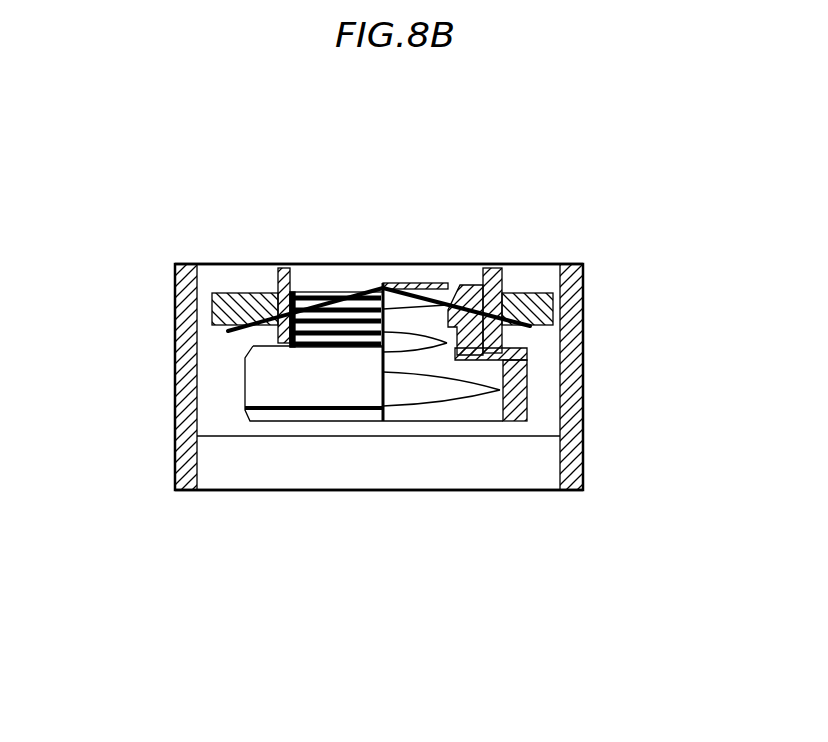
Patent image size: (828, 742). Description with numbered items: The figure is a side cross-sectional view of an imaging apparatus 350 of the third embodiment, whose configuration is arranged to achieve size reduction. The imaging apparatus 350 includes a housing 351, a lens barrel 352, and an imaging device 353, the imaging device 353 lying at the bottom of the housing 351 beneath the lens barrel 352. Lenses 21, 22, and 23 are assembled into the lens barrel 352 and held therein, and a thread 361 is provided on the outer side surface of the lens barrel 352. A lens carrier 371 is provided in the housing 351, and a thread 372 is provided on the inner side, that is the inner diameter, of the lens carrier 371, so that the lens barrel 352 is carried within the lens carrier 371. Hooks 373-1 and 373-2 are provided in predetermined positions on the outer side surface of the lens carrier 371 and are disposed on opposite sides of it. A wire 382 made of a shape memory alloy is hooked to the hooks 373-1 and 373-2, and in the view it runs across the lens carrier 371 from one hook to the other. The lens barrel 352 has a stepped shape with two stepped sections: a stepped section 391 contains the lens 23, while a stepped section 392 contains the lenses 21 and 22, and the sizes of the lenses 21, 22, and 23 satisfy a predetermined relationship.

The imaging apparatus 350 is at (403, 543).
The housing 351 is at (183, 492).
The imaging device 353 is at (295, 492).
The thread 372 is at (307, 267).
The lens carrier 371 is at (283, 267).
The thread 361 is at (352, 267).
The lens barrel 352 is at (430, 285).
The lens 21 is at (455, 285).
The stepped section 392 is at (500, 278).
The hook 373-1 is at (217, 308).
The hook 373-2 is at (543, 310).
The wire 382 is at (523, 332).
The lens 22 is at (515, 365).
The stepped section 391 is at (527, 403).
The lens 23 is at (448, 398).